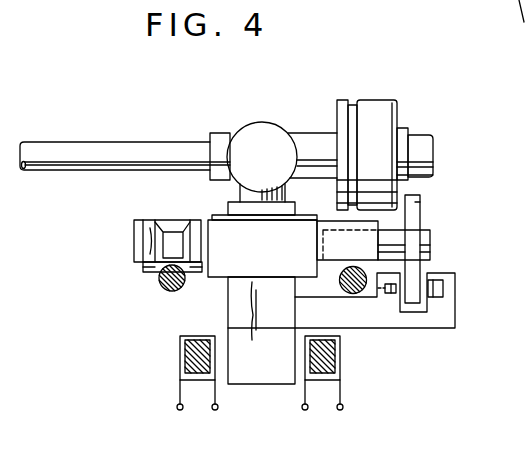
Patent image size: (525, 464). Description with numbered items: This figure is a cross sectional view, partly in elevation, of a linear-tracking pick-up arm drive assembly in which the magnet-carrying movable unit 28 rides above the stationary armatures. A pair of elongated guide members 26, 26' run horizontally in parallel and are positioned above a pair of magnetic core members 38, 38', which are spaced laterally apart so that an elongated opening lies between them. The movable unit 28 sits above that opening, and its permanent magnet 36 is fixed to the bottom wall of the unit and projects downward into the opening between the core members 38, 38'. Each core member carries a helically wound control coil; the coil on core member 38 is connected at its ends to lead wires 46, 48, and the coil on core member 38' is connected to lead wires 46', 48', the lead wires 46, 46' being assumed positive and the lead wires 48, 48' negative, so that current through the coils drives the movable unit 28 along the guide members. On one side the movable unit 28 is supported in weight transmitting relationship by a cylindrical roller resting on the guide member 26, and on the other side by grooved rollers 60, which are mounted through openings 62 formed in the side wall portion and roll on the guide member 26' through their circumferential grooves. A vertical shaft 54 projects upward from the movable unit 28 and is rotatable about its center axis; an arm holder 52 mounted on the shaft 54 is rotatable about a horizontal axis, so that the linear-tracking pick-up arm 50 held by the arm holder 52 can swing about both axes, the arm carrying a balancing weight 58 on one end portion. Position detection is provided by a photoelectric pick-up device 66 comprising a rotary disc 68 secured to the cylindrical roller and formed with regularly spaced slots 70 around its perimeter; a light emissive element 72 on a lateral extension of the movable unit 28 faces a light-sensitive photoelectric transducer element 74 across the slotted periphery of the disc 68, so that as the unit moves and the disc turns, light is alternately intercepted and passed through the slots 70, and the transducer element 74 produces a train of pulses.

The linear-tracking pick-up arm 50 is at (134, 142).
The arm holder 52 is at (238, 128).
The vertical shaft 54 is at (240, 194).
The balancing weight 58 is at (372, 113).
The movable unit 28 is at (270, 258).
The rotary disc 68 is at (431, 231).
The slots or apertures 70 is at (421, 203).
The openings 62 is at (148, 224).
The grooved rollers 60 is at (147, 271).
The guide member 26' is at (162, 295).
The guide member 26 is at (366, 318).
The permanent magnet 36 is at (258, 385).
The photoelectric pick-up device 66 is at (438, 271).
The light emissive element 72 is at (389, 294).
The light-sensitive photoelectric transducer element 74 is at (444, 299).
The magnetic core member 38' is at (172, 358).
The lead wire 46' is at (156, 397).
The lead wire 48' is at (200, 413).
The magnetic core member 38 is at (348, 364).
The lead wire 46 is at (328, 413).
The lead wire 48 is at (364, 401).